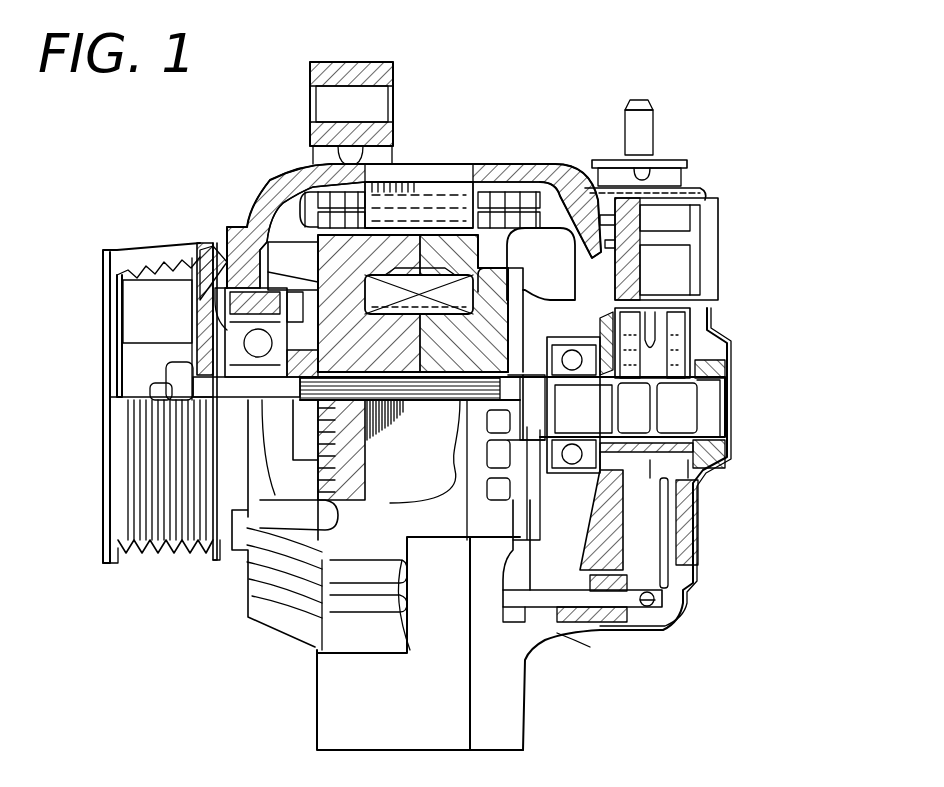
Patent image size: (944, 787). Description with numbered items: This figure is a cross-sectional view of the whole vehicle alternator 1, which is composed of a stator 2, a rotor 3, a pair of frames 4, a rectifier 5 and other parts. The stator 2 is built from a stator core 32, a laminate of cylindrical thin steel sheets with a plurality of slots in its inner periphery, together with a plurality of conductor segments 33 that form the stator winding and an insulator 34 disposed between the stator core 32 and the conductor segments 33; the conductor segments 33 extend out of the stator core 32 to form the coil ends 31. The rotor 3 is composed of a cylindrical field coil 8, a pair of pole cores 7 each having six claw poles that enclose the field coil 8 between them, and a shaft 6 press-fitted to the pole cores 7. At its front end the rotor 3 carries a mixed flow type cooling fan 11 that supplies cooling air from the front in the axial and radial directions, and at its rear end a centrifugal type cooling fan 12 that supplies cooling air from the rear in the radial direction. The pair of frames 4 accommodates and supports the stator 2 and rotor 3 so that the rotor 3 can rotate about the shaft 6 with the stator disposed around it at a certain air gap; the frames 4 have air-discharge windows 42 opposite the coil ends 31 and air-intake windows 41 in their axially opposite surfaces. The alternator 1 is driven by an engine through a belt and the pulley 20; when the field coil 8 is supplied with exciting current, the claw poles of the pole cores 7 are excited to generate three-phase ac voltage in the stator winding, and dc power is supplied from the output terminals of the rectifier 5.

The vehicle alternator 1 is at (552, 44).
The stator 2 is at (512, 252).
The rotor 3 is at (264, 233).
The pair of frames 4 is at (418, 282).
The rectifier 5 is at (668, 513).
The shaft 6 is at (195, 340).
The pole cores 7 is at (553, 182).
The field coil 8 is at (432, 300).
The mixed flow type cooling fan 11 is at (278, 270).
The centrifugal type cooling fan 12 is at (557, 278).
The pulley 20 is at (140, 258).
The coil ends 31 is at (313, 188).
The stator core 32 is at (407, 186).
The conductor segments 33 is at (530, 188).
The insulator 34 is at (500, 188).
The air-intake windows 41 is at (230, 284).
The air-discharge windows 42 is at (283, 234).